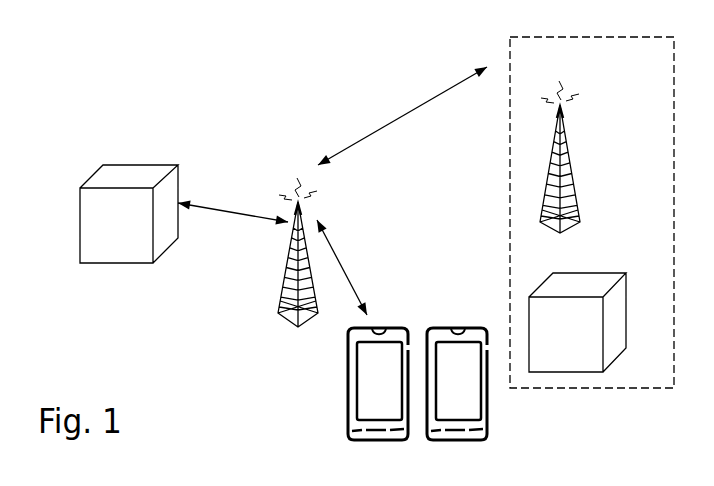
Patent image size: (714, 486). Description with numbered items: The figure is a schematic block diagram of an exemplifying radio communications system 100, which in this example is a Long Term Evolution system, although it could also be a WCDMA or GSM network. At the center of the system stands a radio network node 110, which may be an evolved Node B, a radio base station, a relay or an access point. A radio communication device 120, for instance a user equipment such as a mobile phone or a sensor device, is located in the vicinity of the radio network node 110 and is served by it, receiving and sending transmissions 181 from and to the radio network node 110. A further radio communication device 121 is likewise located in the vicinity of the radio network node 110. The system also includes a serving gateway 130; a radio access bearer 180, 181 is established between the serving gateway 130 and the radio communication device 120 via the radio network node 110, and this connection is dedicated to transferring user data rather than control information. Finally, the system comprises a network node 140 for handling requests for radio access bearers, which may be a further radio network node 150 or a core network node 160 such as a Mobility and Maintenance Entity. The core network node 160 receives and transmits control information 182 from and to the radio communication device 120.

The radio communications system 100 is at (270, 101).
The radio network node 110 is at (270, 252).
The radio communication device 120 is at (378, 384).
The further radio communication device 121 is at (457, 384).
The serving gateway 130 is at (129, 214).
The network node 140 is at (592, 212).
The further radio network node 150 is at (590, 158).
The core network node 160 is at (577, 322).
The radio access bearer 180 is at (233, 202).
The radio access bearer 181 is at (351, 267).
The control information transmission 182 is at (402, 116).